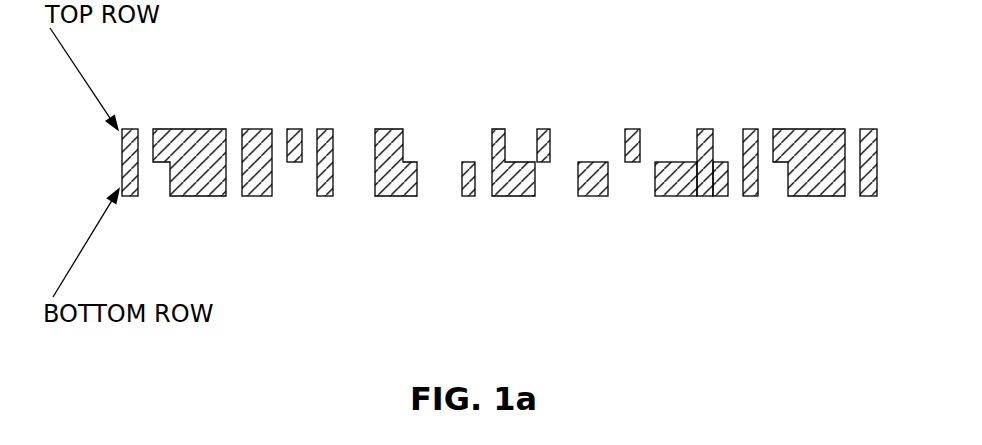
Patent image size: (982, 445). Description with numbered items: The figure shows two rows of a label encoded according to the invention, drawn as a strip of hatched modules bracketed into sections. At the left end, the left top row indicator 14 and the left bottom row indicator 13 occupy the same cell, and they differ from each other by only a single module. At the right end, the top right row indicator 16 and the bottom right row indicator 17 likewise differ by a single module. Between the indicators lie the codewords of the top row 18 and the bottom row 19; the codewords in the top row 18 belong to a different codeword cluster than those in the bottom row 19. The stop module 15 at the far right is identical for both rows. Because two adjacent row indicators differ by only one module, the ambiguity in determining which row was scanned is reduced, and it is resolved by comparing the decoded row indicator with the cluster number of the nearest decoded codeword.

The left bottom row indicator 13 is at (125, 205).
The left top row indicator 14 is at (125, 118).
The stop module 15 is at (863, 118).
The top right row indicator 16 is at (748, 118).
The bottom right row indicator 17 is at (748, 205).
The top row 18 is at (245, 118).
The bottom row 19 is at (740, 205).